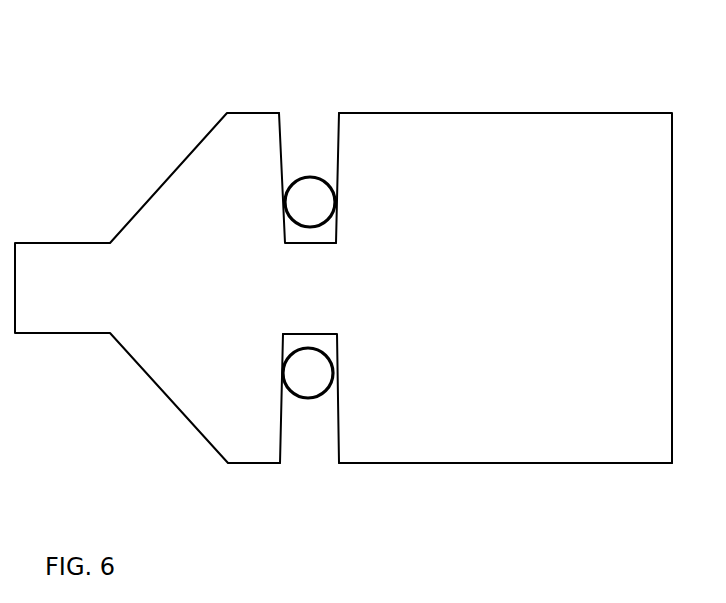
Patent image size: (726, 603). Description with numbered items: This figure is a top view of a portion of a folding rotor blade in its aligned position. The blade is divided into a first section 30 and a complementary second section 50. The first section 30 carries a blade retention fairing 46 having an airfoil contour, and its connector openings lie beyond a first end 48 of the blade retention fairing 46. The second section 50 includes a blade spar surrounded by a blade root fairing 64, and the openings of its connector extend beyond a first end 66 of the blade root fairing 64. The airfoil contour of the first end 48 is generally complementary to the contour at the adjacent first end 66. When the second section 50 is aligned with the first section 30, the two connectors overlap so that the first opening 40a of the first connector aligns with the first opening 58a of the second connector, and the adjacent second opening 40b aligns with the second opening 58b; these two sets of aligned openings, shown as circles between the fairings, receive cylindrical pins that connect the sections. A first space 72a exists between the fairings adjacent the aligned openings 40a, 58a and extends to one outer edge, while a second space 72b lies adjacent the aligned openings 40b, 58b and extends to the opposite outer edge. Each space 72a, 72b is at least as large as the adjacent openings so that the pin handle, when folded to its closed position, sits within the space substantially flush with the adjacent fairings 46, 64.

The first section 30 is at (343, 289).
The blade retention fairing 46 is at (150, 223).
The first end of the blade retention fairing 48 is at (282, 446).
The second section 50 is at (545, 466).
The blade root fairing 64 is at (505, 315).
The first end of the blade root fairing 66 is at (339, 148).
The first space 72a is at (321, 445).
The second space 72b is at (314, 132).
The first opening 40a is at (320, 437).
The first opening of the second connector 58a is at (307, 377).
The second opening 40b is at (296, 143).
The second opening of the second connector 58b is at (307, 196).